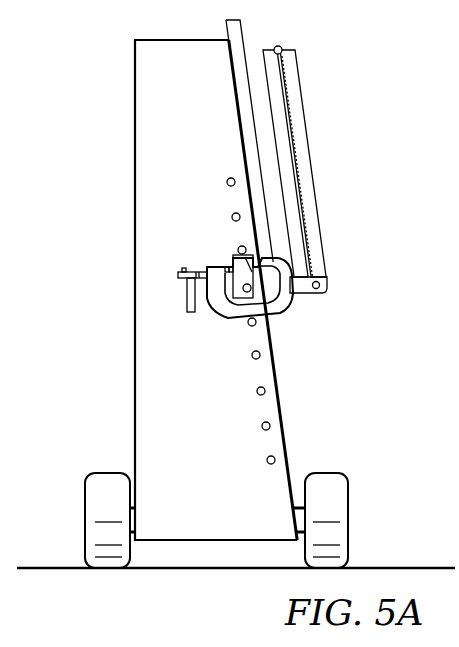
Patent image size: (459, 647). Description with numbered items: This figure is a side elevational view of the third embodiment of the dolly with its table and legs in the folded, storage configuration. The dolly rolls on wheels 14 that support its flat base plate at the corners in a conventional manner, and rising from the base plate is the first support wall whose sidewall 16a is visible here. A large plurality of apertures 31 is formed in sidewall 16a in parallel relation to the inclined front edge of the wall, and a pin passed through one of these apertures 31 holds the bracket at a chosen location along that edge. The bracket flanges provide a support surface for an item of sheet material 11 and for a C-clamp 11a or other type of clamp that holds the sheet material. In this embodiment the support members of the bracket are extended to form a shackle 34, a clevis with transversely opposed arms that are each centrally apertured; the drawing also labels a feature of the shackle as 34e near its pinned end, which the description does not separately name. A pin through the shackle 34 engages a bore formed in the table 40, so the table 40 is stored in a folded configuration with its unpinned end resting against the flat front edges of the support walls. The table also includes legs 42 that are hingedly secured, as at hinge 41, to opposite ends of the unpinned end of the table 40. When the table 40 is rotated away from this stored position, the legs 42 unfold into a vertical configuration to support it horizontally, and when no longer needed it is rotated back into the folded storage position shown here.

The item of sheet material 11 is at (246, 38).
The C-clamp 11a is at (227, 307).
The wheels 14 is at (88, 503).
The sidewall 16a is at (215, 456).
The apertures 31 is at (232, 217).
The shackle 34 is at (324, 280).
The bracket pin 34e is at (322, 290).
The table 40 is at (276, 117).
The hinge 41 is at (282, 47).
The legs 42 is at (310, 157).